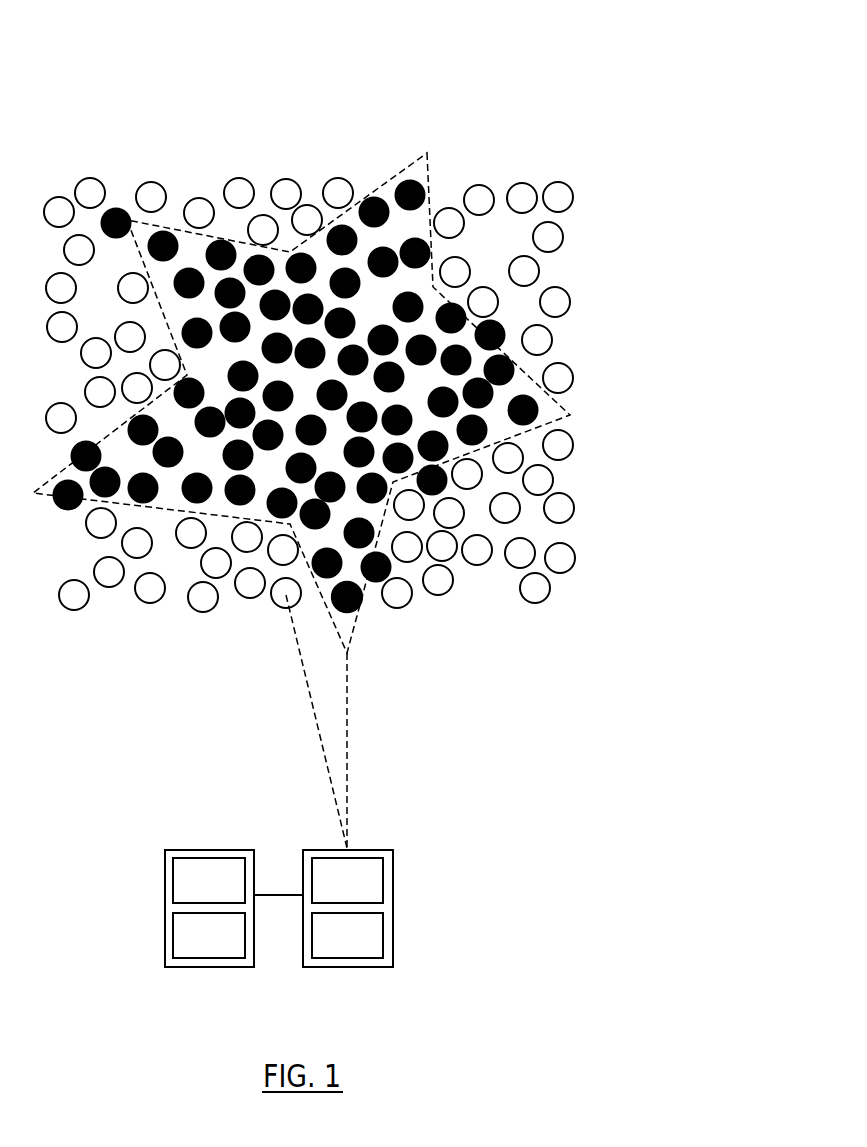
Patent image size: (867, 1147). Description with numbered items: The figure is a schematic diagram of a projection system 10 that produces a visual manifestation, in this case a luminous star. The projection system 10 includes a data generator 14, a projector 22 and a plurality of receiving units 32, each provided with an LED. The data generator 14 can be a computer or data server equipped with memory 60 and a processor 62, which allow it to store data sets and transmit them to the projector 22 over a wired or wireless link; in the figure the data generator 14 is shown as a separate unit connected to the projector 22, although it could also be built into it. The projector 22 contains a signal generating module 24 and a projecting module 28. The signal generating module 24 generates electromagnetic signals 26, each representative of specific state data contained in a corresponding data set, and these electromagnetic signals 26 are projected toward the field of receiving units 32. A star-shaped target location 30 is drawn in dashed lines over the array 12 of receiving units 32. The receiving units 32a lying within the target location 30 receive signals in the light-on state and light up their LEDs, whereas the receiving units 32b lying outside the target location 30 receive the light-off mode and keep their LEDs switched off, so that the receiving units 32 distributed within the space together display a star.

The projection system 10 is at (448, 58).
The light source array 12 is at (245, 143).
The target location 30 is at (428, 173).
The receiving units 32 is at (438, 596).
The receiving units located within the target location 32a is at (360, 606).
The receiving units located outside the target location 32b is at (277, 610).
The electromagnetic signals 26 is at (317, 722).
The data generator 14 is at (208, 967).
The memory 60 is at (209, 880).
The processor 62 is at (209, 935).
The projector 22 is at (347, 967).
The projecting module 28 is at (347, 880).
The signal generating module 24 is at (347, 935).